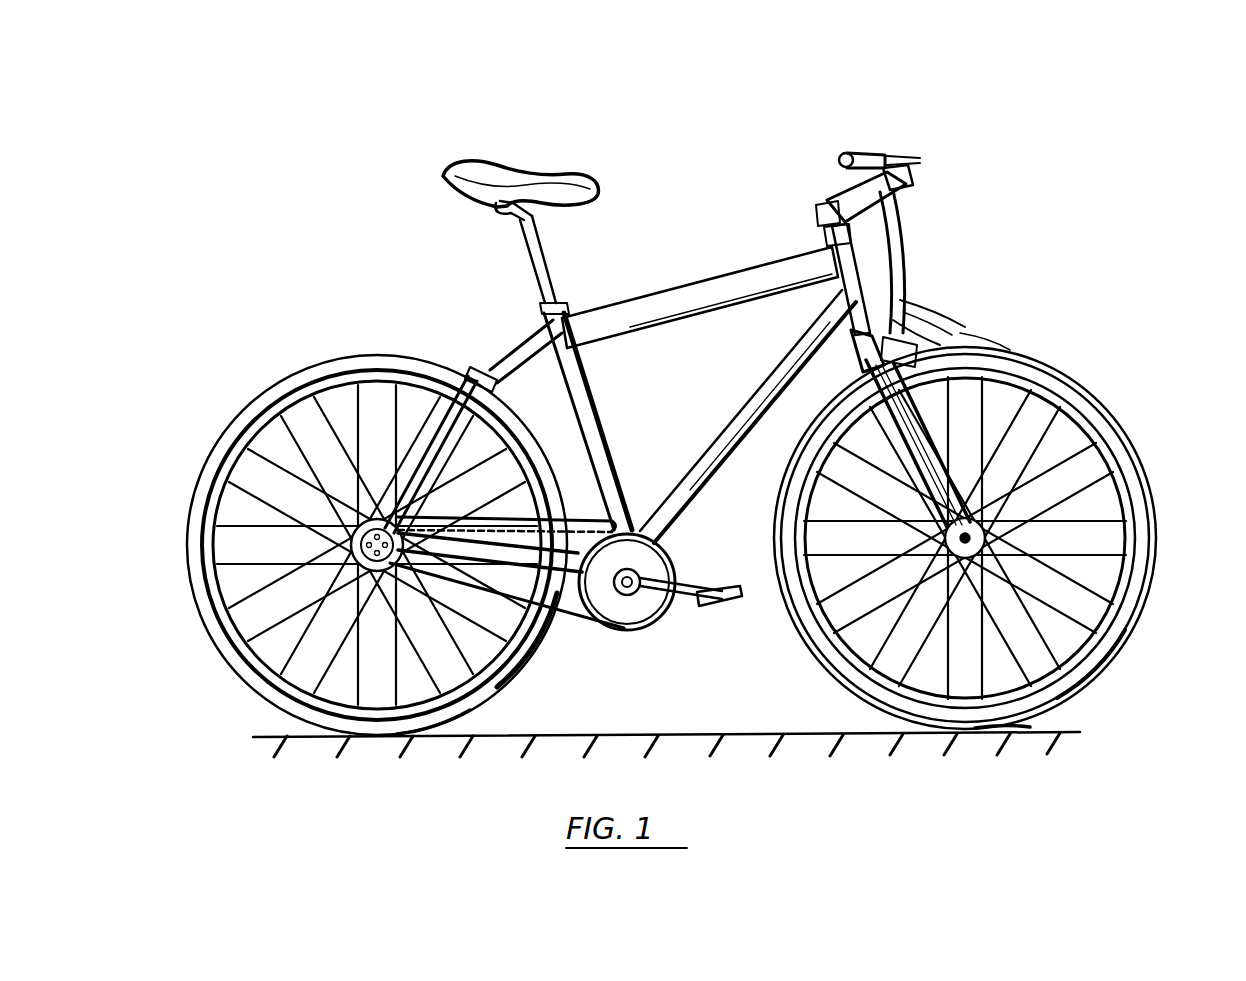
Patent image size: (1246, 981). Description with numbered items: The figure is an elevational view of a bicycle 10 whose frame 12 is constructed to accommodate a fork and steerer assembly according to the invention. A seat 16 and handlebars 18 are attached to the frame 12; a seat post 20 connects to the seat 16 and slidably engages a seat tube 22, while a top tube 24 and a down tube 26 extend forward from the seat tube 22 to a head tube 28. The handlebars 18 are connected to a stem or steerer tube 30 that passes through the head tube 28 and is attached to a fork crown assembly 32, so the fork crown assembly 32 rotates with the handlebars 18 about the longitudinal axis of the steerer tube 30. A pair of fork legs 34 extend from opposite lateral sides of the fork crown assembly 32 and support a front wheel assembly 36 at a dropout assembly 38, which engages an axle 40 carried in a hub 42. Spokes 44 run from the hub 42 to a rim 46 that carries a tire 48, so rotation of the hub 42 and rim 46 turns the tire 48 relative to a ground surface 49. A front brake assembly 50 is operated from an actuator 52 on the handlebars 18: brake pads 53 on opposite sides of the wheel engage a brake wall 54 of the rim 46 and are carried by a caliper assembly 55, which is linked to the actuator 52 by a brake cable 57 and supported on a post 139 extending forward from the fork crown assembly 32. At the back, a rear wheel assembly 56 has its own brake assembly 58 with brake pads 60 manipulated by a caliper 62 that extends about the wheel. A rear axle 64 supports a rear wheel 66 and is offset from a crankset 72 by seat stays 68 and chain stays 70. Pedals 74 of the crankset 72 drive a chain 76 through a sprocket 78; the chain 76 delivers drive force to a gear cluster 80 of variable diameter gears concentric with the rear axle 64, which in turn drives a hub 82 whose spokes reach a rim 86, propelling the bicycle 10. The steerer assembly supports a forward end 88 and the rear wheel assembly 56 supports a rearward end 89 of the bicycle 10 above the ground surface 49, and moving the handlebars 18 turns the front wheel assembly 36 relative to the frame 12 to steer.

The bicycle 10 is at (683, 396).
The frame 12 is at (653, 388).
The seat 16 is at (527, 172).
The handlebars 18 is at (890, 155).
The seat post 20 is at (520, 246).
The seat tube 22 is at (603, 417).
The top tube 24 is at (668, 300).
The down tube 26 is at (736, 426).
The head tube 28 is at (850, 268).
The stem or steerer tube 30 is at (828, 228).
The fork crown assembly 32 is at (872, 403).
The fork legs 34 is at (855, 413).
The front wheel assembly 36 is at (997, 516).
The dropout assembly 38 is at (1030, 500).
The axle 40 is at (995, 538).
The hub 42 is at (1007, 576).
The spokes 44 is at (1092, 667).
The rim 46 is at (1118, 600).
The tire 48 is at (1123, 632).
The ground surface 49 is at (1068, 733).
The front brake assembly 50 is at (986, 313).
The actuator 52 is at (905, 160).
The brake pads 53 is at (1003, 348).
The brake wall 54 is at (1050, 393).
The caliper assembly 55 is at (926, 340).
The rear wheel assembly 56 is at (357, 526).
The brake cable 57 is at (897, 236).
The brake assembly 58 is at (454, 356).
The brake pads 60 is at (466, 376).
The caliper 62 is at (483, 372).
The rear axle 64 is at (335, 512).
The rear wheel 66 is at (330, 378).
The seat stays 68 is at (515, 378).
The chain stays 70 is at (590, 512).
The crankset 72 is at (649, 506).
The pedals 74 is at (732, 582).
The chain 76 is at (577, 626).
The sprocket 78 is at (646, 630).
The gear cluster 80 is at (262, 664).
The hub 82 is at (368, 550).
The rim 86 is at (218, 478).
The forward end 88 is at (912, 74).
The rearward end 89 is at (442, 125).
The post 139 is at (965, 296).